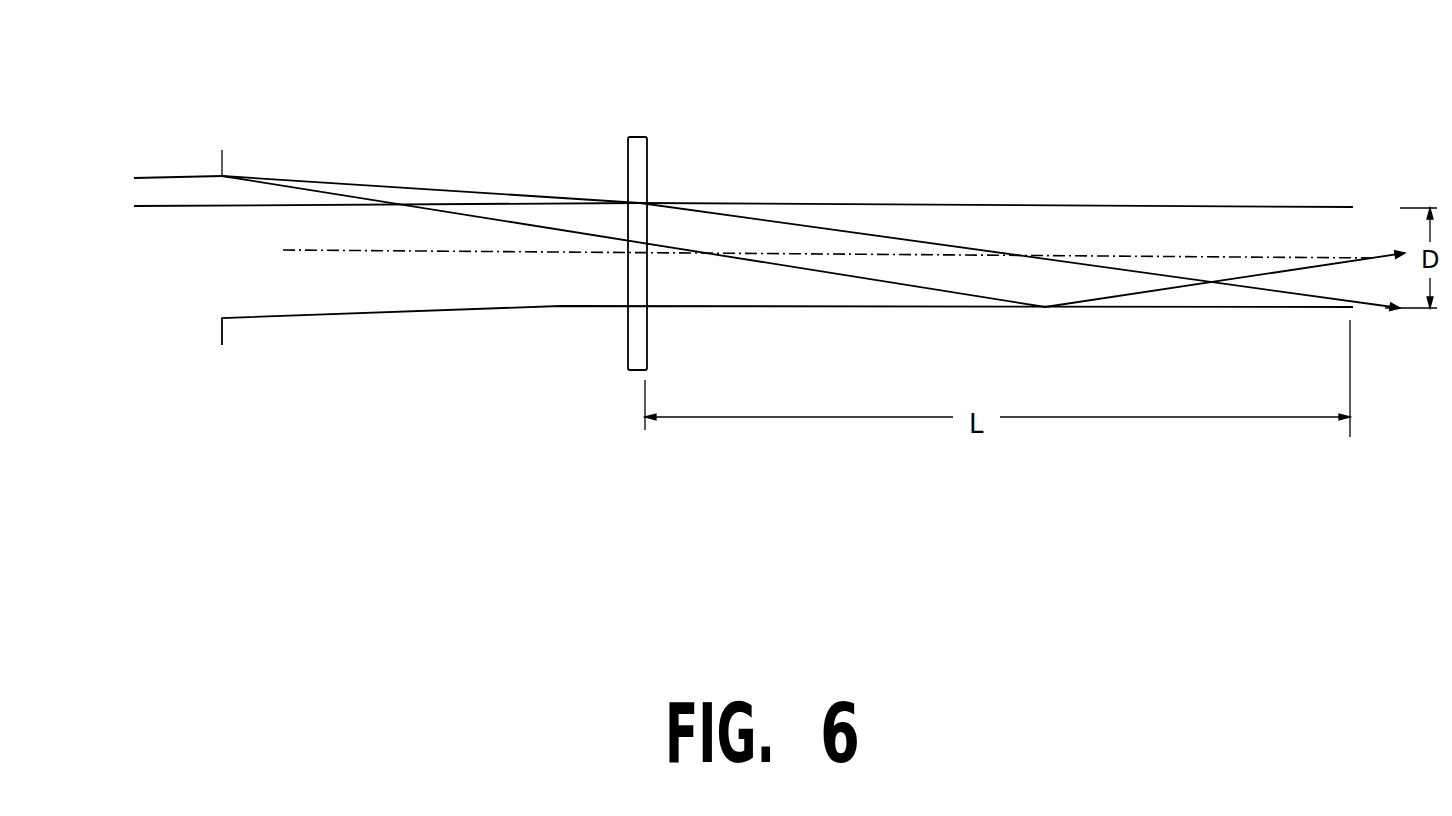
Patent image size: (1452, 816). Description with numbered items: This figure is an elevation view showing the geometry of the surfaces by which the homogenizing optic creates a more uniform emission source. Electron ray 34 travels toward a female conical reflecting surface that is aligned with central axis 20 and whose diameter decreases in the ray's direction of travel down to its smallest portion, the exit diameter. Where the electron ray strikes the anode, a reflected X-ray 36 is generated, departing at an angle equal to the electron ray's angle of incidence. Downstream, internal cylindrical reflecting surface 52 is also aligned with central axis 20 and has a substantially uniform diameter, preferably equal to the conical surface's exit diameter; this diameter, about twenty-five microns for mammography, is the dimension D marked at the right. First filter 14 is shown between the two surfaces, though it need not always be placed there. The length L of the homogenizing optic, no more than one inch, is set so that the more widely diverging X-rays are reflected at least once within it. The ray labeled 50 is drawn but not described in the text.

The first filter 14 is at (675, 205).
The central axis 20 is at (829, 317).
The electron ray 34 is at (387, 186).
The reflected X-ray 36 is at (813, 262).
The incoming light ray 50 is at (431, 136).
The internal cylindrical reflecting surface 52 is at (996, 159).